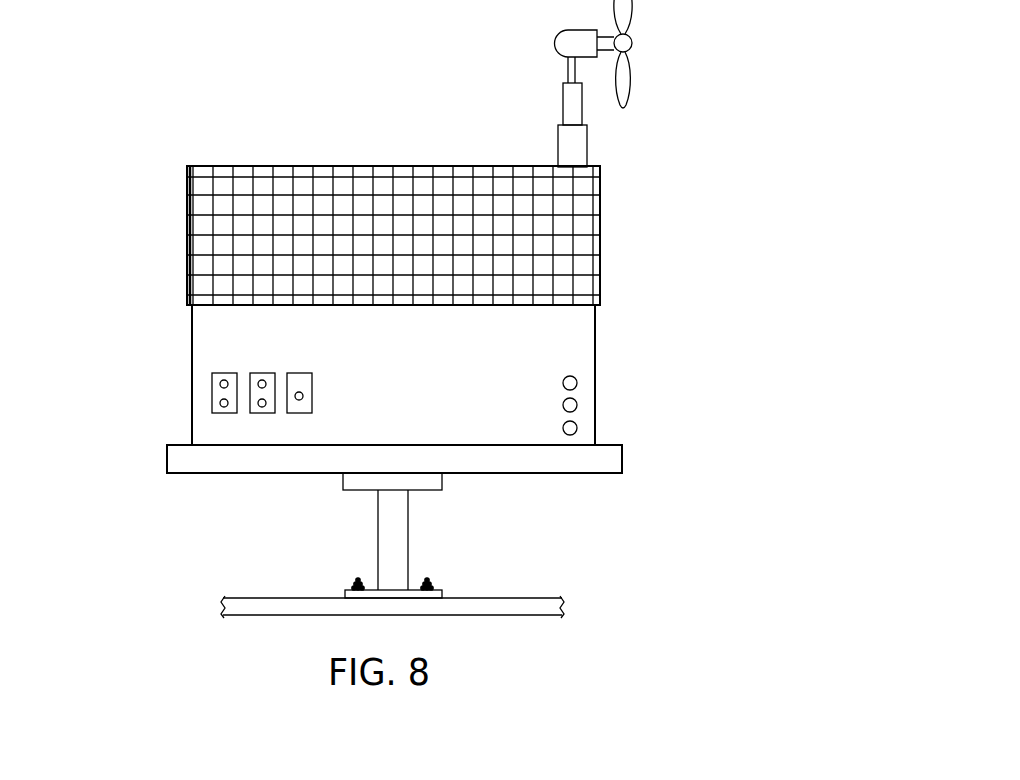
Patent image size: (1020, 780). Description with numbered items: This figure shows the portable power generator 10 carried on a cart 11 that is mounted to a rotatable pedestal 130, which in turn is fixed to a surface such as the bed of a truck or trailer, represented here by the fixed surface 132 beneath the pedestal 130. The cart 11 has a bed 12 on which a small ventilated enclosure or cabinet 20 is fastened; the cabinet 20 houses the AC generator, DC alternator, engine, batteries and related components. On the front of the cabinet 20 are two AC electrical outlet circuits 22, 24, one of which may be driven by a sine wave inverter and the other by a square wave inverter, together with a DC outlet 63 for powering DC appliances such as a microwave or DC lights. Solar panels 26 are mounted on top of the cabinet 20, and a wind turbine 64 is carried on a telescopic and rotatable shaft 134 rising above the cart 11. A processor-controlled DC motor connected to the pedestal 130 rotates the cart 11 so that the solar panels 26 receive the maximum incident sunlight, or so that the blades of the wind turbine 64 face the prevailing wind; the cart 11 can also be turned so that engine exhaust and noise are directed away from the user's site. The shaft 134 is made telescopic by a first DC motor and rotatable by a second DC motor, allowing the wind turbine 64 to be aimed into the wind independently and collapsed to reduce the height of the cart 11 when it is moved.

The portable power generator 10 is at (133, 122).
The cart 11 is at (597, 397).
The bed 12 is at (477, 462).
The enclosure or cabinet 20 is at (192, 371).
The electrical outlet circuit 22 is at (225, 373).
The electrical outlet circuit 24 is at (262, 373).
The solar panels 26 is at (484, 183).
The DC outlet 63 is at (300, 373).
The wind turbine 64 is at (552, 41).
The pedestal 130 is at (398, 548).
The ground surface 132 is at (253, 605).
The telescopic and rotatable shaft 134 is at (588, 136).